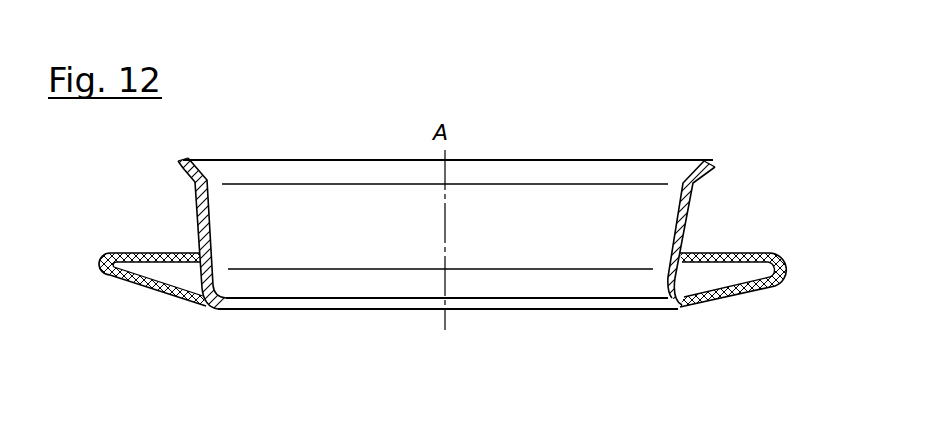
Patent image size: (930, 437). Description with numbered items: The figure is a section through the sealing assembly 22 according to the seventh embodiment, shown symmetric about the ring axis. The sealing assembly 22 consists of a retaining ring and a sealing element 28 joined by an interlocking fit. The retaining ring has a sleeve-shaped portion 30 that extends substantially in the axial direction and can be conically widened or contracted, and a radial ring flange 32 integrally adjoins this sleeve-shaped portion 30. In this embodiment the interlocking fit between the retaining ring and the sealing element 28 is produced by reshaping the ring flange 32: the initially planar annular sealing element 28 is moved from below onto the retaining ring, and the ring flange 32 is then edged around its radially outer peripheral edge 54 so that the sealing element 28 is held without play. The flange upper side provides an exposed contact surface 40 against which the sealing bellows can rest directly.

The sealing assembly 22 is at (584, 146).
The sealing element 28 is at (650, 316).
The sleeve-shaped portion 30 is at (694, 206).
The radial ring flange 32 is at (770, 247).
The exposed contact surface 40 is at (712, 275).
The radially outer peripheral edge 54 is at (100, 267).